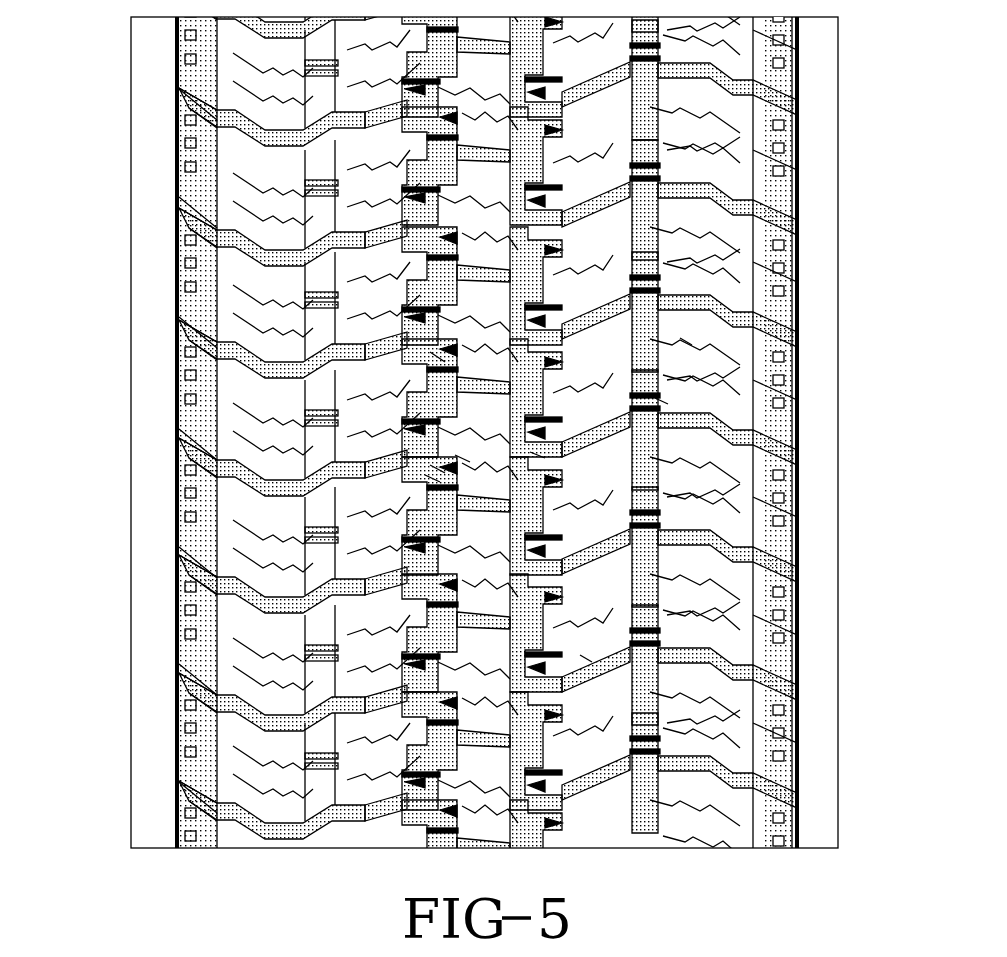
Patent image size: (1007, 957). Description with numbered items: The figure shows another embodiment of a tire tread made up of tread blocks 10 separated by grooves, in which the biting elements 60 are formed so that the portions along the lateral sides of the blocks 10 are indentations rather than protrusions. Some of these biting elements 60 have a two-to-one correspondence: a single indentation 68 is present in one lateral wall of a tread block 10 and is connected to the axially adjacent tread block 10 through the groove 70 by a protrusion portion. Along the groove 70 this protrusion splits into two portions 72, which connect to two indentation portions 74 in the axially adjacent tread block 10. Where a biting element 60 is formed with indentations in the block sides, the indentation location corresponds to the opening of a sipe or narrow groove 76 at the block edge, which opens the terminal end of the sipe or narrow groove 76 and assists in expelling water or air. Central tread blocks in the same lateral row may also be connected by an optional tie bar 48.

The tread block 10 is at (725, 105).
The biting element 60 is at (440, 360).
The indentation portion 74 is at (460, 493).
The protrusion portion 72 is at (440, 470).
The indentation 68 is at (430, 480).
The sipe or narrow groove 76 is at (685, 342).
The groove 70 is at (535, 457).
The tie bar 48 is at (585, 660).